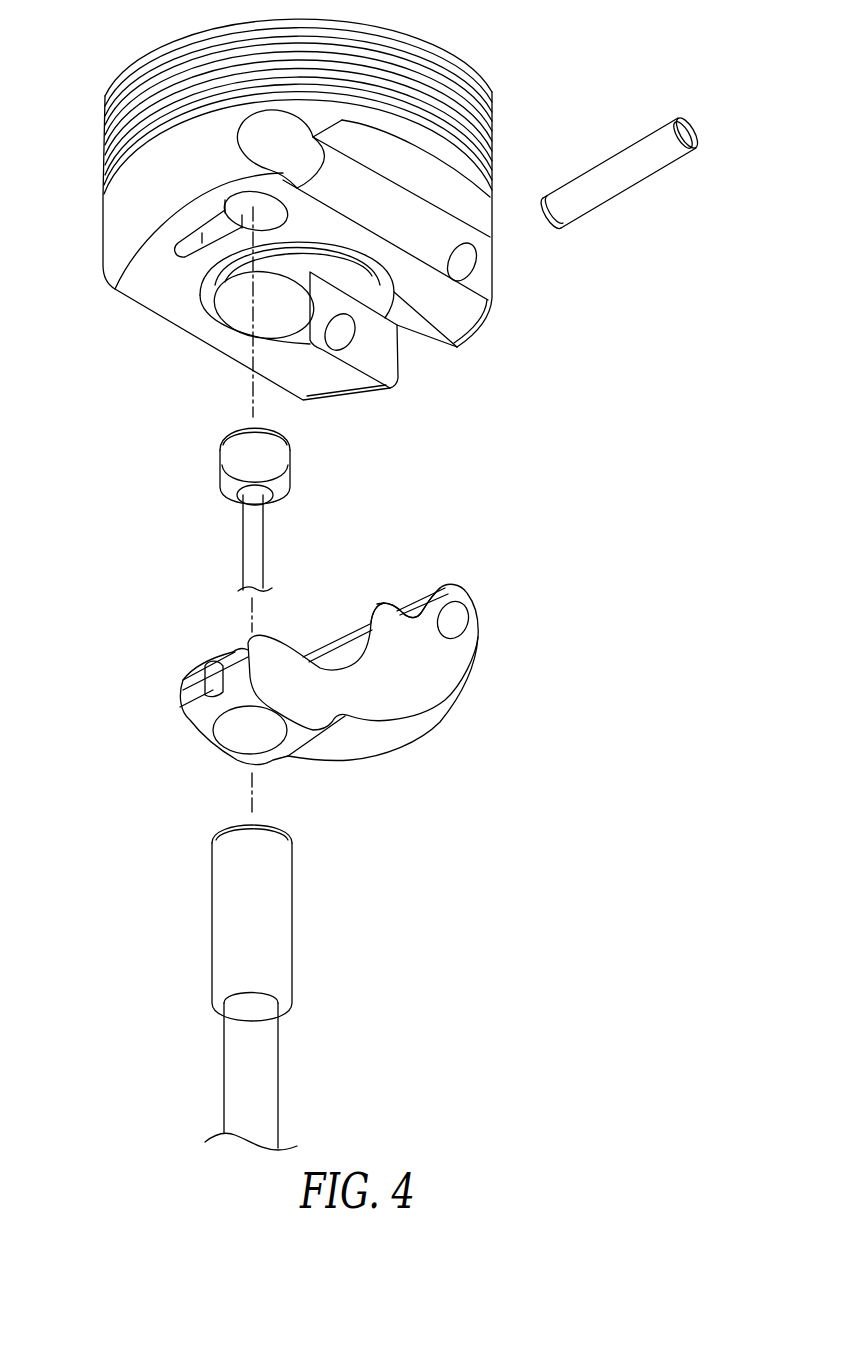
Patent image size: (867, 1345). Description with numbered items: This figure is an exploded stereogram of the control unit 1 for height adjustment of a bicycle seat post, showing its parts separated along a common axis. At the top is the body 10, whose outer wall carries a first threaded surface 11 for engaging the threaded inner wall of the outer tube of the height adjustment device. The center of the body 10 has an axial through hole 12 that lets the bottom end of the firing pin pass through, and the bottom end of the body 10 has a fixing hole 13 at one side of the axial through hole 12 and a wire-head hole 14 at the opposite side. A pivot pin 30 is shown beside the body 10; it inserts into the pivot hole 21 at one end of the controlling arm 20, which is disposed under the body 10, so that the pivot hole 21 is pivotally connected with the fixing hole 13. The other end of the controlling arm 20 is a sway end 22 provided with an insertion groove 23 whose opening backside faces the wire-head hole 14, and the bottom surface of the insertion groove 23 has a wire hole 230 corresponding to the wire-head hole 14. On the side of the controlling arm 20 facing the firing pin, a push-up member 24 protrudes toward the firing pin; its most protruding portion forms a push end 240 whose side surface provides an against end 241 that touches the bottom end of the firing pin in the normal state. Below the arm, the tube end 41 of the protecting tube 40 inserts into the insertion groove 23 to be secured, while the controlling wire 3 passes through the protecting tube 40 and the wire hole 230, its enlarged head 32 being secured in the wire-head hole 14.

The control unit 1 is at (557, 563).
The body 10 is at (303, 219).
The first threaded surface 11 is at (467, 122).
The axial through hole 12 is at (245, 287).
The fixing hole 13 is at (463, 268).
The wire-head hole 14 is at (242, 205).
The controlling arm 20 is at (331, 658).
The pivot hole 21 is at (455, 623).
The sway end 22 is at (244, 658).
The insertion groove 23 is at (270, 733).
The push-up member 24 is at (394, 628).
The push end 240 is at (375, 608).
The against end 241 is at (400, 607).
The wire hole 230 is at (218, 681).
The controlling wire 3 is at (250, 550).
The pivot pin 30 is at (638, 165).
The enlarged head 32 is at (237, 455).
The protecting tube 40 is at (242, 1087).
The tube end 41 is at (237, 920).